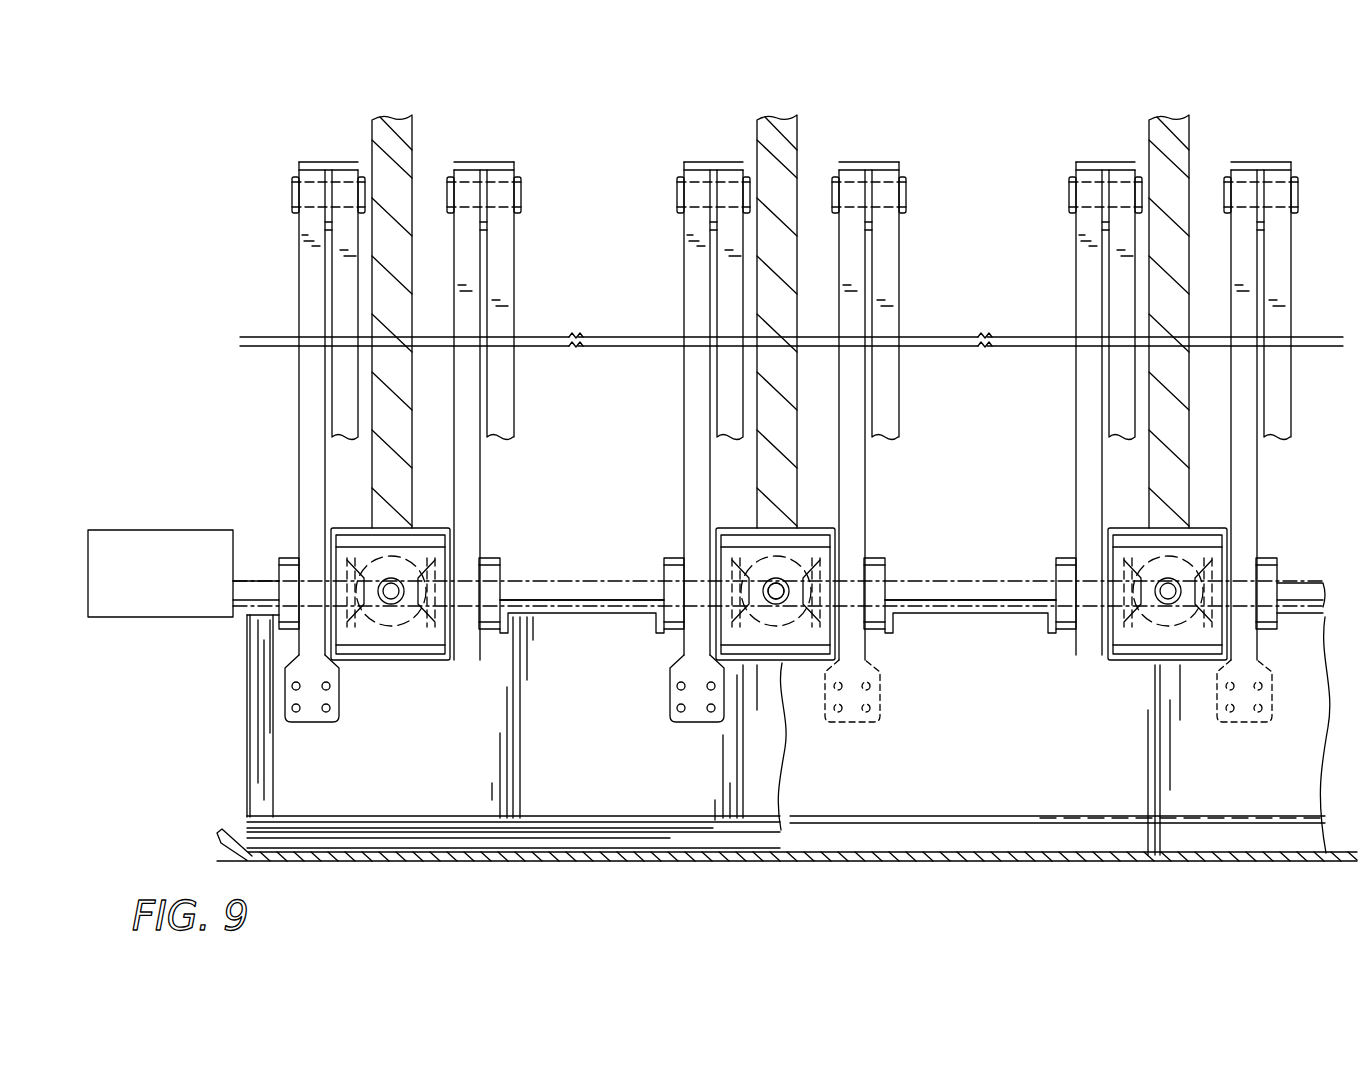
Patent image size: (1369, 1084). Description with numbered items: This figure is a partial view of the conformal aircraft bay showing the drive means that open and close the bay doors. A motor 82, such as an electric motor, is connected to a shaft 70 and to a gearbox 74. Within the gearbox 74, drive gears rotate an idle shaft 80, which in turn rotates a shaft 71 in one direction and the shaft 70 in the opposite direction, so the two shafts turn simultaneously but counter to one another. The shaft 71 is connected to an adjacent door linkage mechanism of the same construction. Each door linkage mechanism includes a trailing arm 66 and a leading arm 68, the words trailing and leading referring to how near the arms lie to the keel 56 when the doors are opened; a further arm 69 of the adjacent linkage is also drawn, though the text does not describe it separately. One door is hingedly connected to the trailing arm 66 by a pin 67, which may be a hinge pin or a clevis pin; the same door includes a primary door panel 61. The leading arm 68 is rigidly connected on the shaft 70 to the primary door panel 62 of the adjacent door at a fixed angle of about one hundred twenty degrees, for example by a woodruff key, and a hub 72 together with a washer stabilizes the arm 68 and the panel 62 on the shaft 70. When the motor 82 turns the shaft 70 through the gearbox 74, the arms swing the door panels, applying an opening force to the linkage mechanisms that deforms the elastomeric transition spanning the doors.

The keel 56 is at (807, 314).
The primary door panel 61 is at (881, 693).
The primary door panel 62 is at (665, 690).
The trailing arm 66 is at (680, 305).
The pin 67 is at (684, 196).
The leading arm 68 is at (664, 408).
The arm 69 is at (888, 415).
The shaft 70 is at (595, 583).
The shaft 71 is at (947, 590).
The hub 72 is at (653, 556).
The gearbox 74 is at (775, 652).
The idle shaft 80 is at (845, 555).
The motor 82 is at (123, 620).